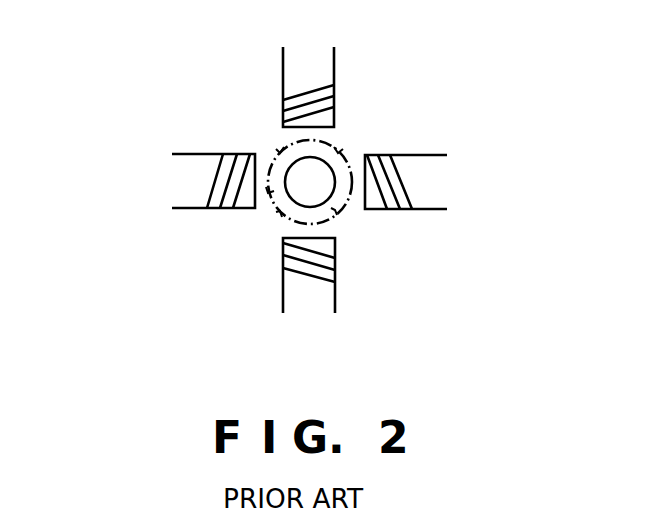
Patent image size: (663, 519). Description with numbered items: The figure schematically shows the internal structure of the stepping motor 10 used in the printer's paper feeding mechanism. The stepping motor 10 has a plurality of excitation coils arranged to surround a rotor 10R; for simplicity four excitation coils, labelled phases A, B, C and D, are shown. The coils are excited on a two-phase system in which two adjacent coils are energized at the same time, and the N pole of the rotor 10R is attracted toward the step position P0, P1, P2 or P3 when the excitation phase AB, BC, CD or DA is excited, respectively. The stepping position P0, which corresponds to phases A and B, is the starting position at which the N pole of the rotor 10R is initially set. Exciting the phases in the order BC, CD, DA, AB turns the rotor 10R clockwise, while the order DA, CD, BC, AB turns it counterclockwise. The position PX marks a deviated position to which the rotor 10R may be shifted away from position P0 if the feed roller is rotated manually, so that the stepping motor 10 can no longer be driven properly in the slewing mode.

The stepping motor 10 is at (425, 79).
The rotor 10R is at (327, 204).
The stepping position P0 is at (338, 152).
The step position P1 is at (336, 211).
The step position P2 is at (280, 211).
The step position P3 is at (280, 152).
The position PX is at (268, 193).